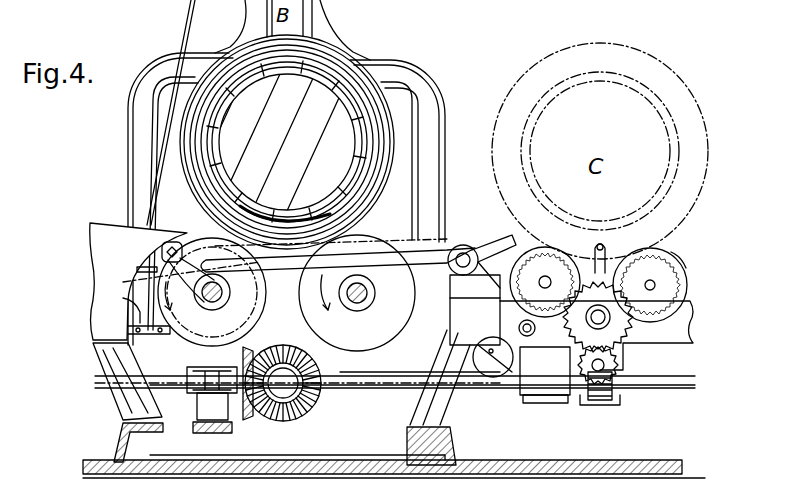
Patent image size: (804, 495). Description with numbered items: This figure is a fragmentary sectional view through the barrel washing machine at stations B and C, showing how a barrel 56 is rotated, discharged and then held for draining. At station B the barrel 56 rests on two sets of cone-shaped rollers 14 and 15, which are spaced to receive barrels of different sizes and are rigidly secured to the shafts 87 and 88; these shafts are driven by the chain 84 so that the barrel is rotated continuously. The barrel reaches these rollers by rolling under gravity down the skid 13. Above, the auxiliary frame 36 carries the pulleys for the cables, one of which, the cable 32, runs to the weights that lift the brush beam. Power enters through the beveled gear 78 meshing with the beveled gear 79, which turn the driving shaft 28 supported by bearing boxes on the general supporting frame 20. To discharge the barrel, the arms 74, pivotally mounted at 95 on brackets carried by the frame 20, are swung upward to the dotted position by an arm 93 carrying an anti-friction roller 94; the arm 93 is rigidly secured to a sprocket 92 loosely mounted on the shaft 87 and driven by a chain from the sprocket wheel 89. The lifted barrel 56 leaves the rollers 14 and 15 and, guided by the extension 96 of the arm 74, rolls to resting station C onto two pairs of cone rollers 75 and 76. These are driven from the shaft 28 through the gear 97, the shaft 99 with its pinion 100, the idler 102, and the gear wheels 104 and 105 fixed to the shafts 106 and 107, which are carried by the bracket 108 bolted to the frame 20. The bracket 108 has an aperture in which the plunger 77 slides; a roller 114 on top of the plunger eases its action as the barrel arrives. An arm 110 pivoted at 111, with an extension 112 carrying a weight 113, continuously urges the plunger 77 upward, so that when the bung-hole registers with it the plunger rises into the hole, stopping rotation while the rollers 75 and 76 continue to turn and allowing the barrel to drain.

The skid 13 is at (110, 225).
The rollers 14 is at (212, 292).
The rollers 15 is at (357, 293).
The supporting frame 20 is at (667, 337).
The driving shaft 28 is at (480, 395).
The flexible cable 32 is at (187, 17).
The auxiliary frame 36 is at (325, 34).
The barrel 56 is at (279, 142).
The arms 74 is at (372, 246).
The cone rollers 75 is at (540, 254).
The cone rollers 76 is at (676, 265).
The plunger 77 is at (650, 273).
The beveled gear 78 is at (250, 410).
The beveled gear 79 is at (300, 410).
The chain 84 is at (322, 398).
The shaft 87 is at (230, 293).
The shaft 88 is at (376, 291).
The sprocket wheel 89 is at (123, 300).
The sprocket 92 is at (135, 281).
The arm 93 is at (137, 268).
The anti-friction roller 94 is at (162, 246).
The pivot 95 is at (463, 245).
The extension 96 is at (490, 240).
The gear 97 is at (600, 406).
The shaft 99 is at (610, 392).
The pinion 100 is at (620, 360).
The idler 102 is at (616, 327).
The gear wheel 104 is at (548, 291).
The gear wheel 105 is at (657, 295).
The shaft 106 is at (545, 282).
The shaft 107 is at (650, 285).
The bracket 108 is at (595, 262).
The arm 110 is at (545, 375).
The pivot 111 is at (528, 337).
The extension 112 is at (470, 355).
The weight 113 is at (498, 372).
The roller 114 is at (600, 243).